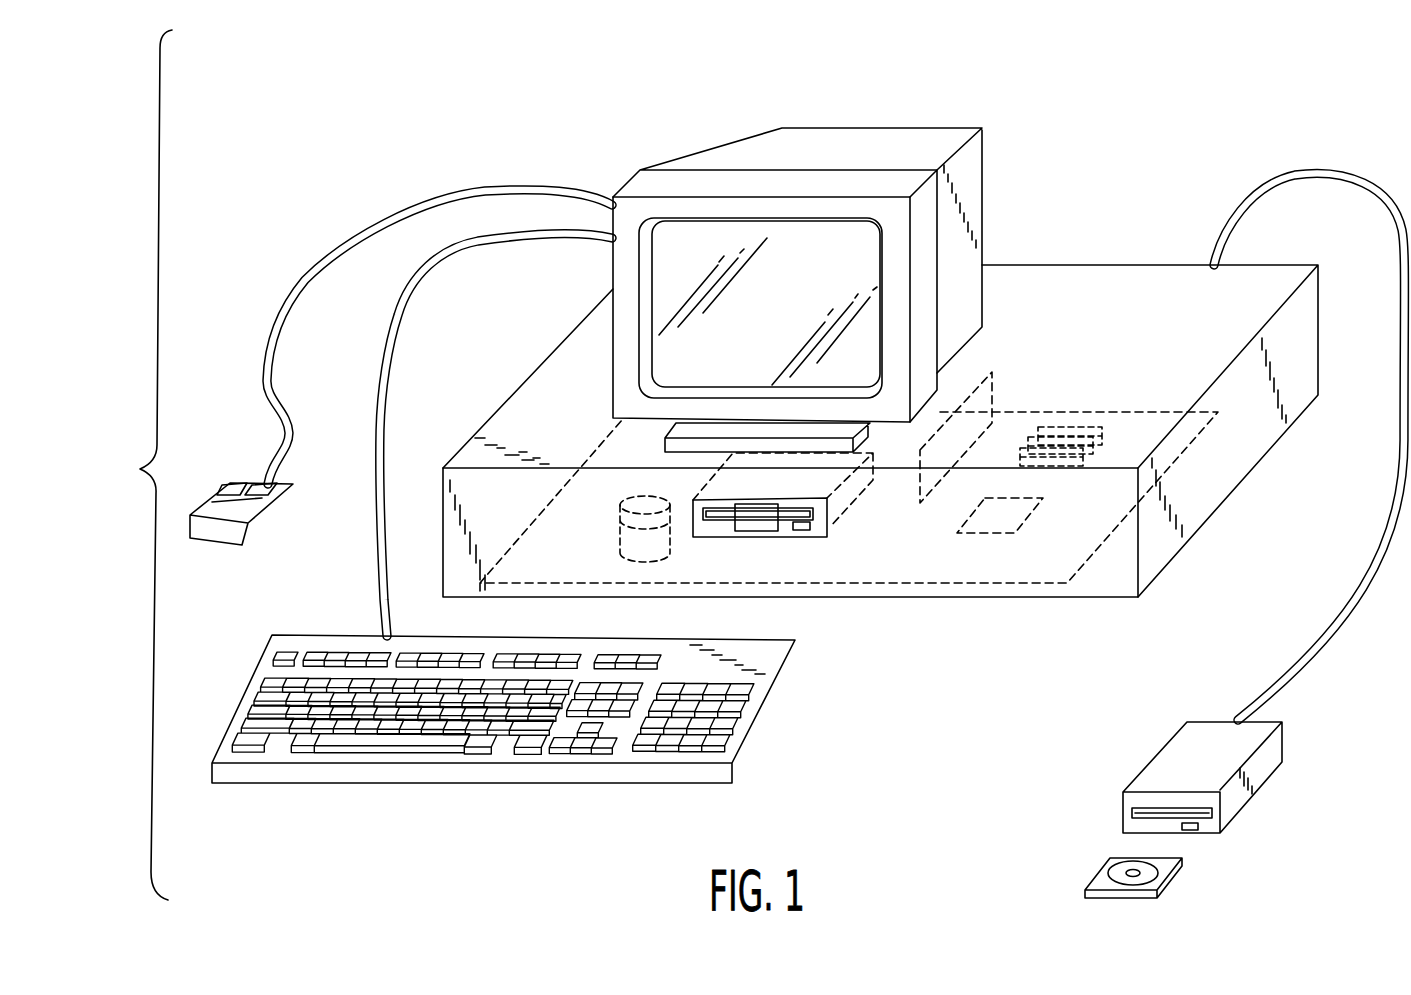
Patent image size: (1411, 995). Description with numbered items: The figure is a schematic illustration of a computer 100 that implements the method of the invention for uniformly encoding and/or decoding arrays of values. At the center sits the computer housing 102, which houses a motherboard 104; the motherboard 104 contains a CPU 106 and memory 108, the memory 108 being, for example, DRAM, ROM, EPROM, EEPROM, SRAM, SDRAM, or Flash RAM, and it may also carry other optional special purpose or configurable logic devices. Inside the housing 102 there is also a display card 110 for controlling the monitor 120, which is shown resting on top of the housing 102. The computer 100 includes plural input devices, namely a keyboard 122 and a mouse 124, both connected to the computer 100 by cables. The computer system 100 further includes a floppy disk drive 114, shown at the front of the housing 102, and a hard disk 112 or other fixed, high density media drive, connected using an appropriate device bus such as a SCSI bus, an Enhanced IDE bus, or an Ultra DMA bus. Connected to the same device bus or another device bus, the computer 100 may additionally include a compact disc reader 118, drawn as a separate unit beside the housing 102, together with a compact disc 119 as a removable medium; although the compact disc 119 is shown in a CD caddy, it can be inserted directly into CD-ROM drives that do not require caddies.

The computer 100 is at (128, 465).
The computer housing 102 is at (1093, 278).
The motherboard 104 is at (1150, 425).
The CPU 106 is at (1017, 522).
The memory 108 is at (1058, 432).
The display card 110 is at (992, 387).
The hard disk 112 is at (622, 534).
The floppy disk drive 114 is at (818, 529).
The compact disc reader 118 is at (1182, 740).
The compact disc 119 is at (1157, 872).
The monitor 120 is at (877, 147).
The keyboard 122 is at (783, 688).
The mouse 124 is at (273, 510).